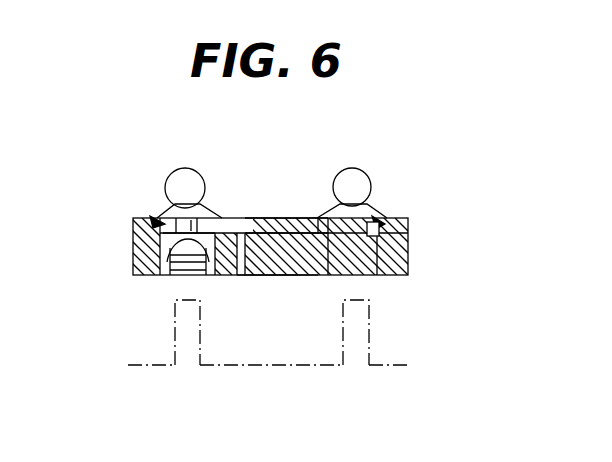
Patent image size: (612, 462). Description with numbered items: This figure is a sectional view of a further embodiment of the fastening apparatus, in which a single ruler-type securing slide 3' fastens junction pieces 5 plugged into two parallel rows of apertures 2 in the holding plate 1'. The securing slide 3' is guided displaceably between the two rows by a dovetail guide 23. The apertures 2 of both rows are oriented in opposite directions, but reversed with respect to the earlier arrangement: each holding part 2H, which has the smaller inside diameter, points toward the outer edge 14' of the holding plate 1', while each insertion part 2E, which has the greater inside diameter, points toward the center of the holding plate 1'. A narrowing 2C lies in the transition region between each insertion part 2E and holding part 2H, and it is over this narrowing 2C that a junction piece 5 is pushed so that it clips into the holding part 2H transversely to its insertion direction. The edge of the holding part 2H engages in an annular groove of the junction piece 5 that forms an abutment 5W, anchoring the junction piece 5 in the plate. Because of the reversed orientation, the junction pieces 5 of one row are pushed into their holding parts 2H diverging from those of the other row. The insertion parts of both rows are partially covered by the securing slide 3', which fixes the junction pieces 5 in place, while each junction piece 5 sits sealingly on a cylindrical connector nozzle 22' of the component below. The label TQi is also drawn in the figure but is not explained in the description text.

The holding plate 1' is at (275, 224).
The outer edge of the holding plate 14' is at (132, 224).
The holding part 2H is at (160, 222).
The abutment 5W is at (185, 215).
The junction piece 5 is at (366, 180).
The narrowing 2C is at (213, 218).
The aperture 2 is at (245, 225).
The insertion part 2E is at (318, 218).
The connector nozzle 22' is at (285, 361).
The dovetail guide 23 is at (230, 275).
The securing slide 3' is at (266, 347).
The torque TQi is at (252, 276).